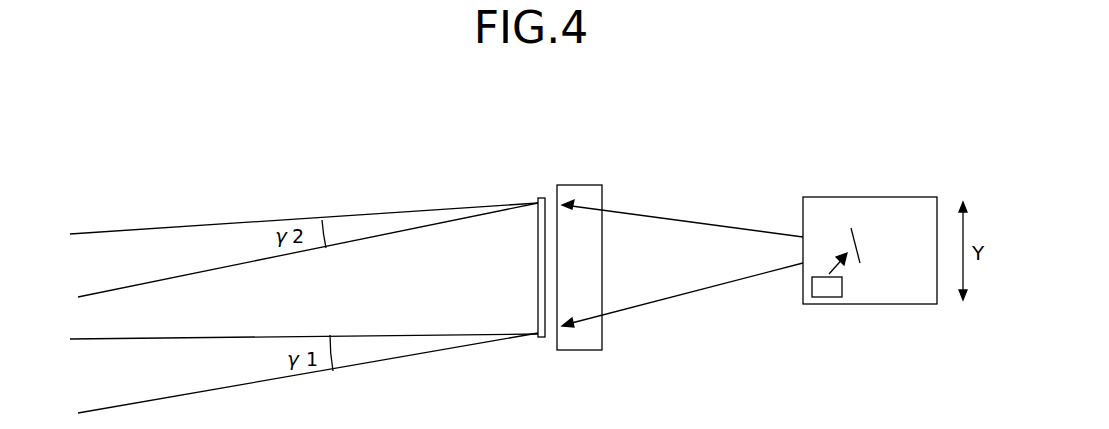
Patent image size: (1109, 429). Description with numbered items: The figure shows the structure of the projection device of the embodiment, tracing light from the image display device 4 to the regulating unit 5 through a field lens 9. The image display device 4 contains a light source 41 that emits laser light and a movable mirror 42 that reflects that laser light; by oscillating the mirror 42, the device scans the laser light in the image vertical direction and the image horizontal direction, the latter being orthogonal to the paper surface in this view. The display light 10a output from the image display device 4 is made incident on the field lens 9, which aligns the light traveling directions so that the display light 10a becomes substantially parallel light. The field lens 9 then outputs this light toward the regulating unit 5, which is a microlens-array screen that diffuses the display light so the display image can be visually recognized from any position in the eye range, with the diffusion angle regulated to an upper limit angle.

The image display device 4 is at (833, 197).
The regulating unit 5 is at (540, 197).
The field lens 9 is at (588, 185).
The display light 10a is at (699, 220).
The light source 41 is at (828, 299).
The movable mirror 42 is at (857, 243).